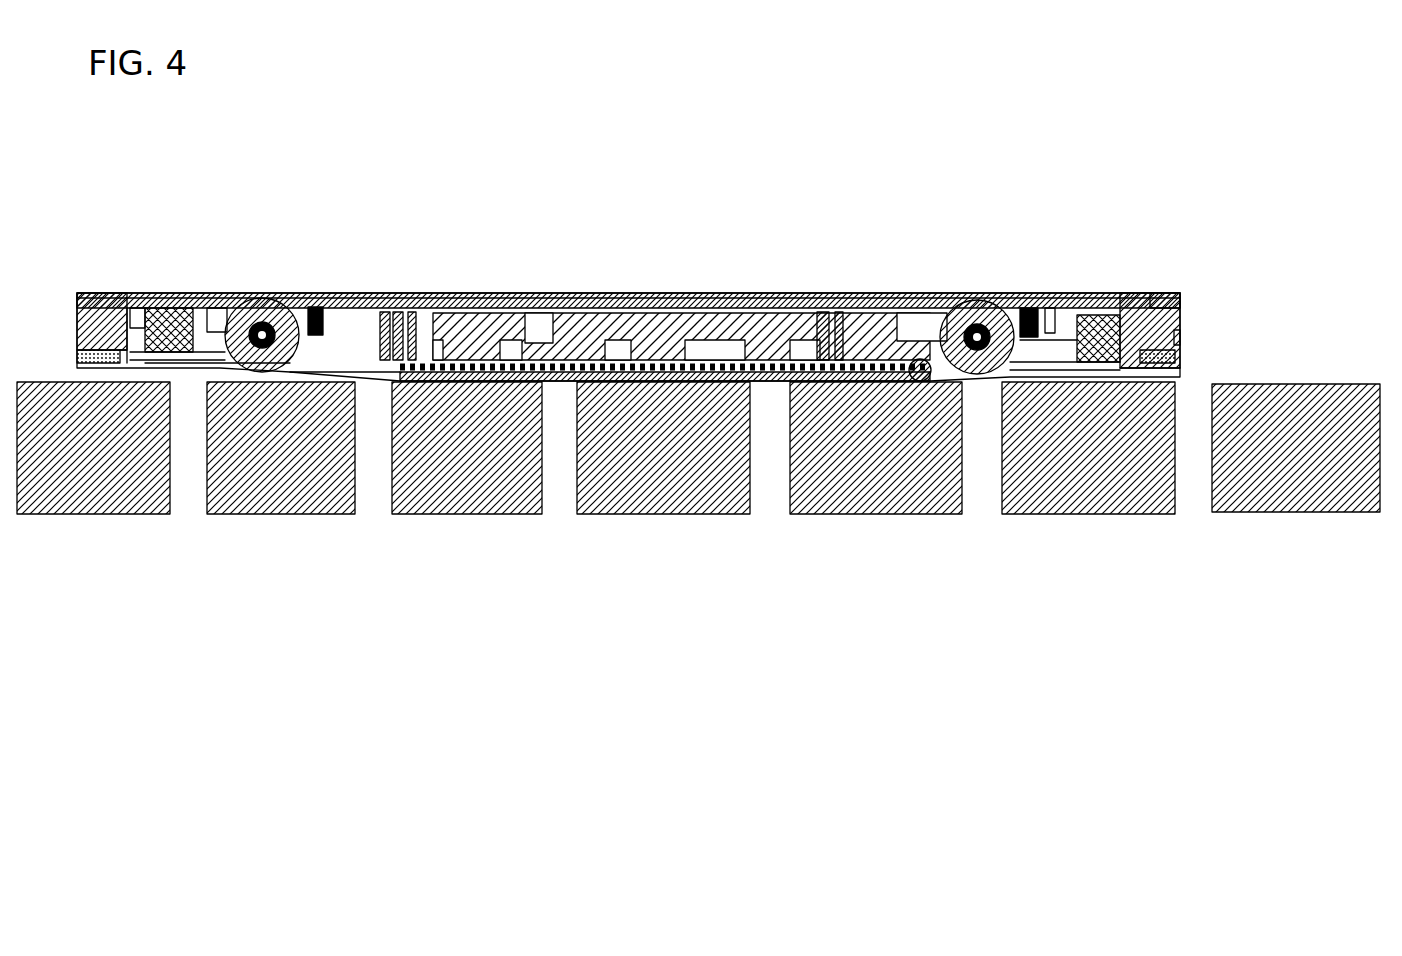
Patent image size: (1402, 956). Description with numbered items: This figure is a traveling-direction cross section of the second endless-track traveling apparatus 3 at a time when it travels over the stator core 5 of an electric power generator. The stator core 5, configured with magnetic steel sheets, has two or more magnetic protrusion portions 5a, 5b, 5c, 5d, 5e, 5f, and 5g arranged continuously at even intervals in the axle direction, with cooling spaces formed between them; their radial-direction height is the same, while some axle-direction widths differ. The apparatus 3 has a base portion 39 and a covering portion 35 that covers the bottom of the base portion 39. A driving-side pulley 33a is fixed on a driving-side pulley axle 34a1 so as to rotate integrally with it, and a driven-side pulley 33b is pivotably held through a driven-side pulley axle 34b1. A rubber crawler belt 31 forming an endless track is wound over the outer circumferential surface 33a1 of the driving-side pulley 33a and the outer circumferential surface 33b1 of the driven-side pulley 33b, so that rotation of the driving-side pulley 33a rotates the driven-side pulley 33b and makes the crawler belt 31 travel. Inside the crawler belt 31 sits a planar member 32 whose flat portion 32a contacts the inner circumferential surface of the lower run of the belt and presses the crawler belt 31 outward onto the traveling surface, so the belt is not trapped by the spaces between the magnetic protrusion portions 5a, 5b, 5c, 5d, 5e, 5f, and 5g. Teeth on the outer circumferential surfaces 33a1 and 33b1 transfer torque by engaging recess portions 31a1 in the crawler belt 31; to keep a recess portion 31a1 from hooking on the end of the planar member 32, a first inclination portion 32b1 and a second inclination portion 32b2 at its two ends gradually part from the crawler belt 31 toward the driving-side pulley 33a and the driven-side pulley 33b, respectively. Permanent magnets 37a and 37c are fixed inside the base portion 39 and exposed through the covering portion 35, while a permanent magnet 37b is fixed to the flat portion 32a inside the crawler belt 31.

The second endless-track traveling apparatus 3 is at (725, 218).
The stator core 5 is at (618, 507).
The magnetic protrusion portion 5a is at (93, 450).
The magnetic protrusion portion 5b is at (282, 450).
The magnetic protrusion portion 5c is at (480, 450).
The magnetic protrusion portion 5d is at (670, 445).
The magnetic protrusion portion 5e is at (882, 445).
The magnetic protrusion portion 5f is at (1080, 445).
The magnetic protrusion portion 5g is at (1272, 437).
The crawler belt 31 is at (363, 296).
The recess portion 31a1 is at (925, 372).
The planar member 32 is at (503, 295).
The flat portion 32a is at (560, 355).
The first inclination portion 32b1 is at (390, 350).
The second inclination portion 32b2 is at (877, 357).
The driving-side pulley 33a is at (250, 297).
The outer circumferential surface 33a1 is at (230, 297).
The driven-side pulley 33b is at (1000, 320).
The outer circumferential surface 33b1 is at (960, 320).
The driving-side pulley axle 34a1 is at (293, 297).
The driven-side pulley axle 34b1 is at (1008, 323).
The covering portion 35 is at (1178, 337).
The permanent magnet 37a is at (147, 297).
The permanent magnet 37b is at (725, 335).
The permanent magnet 37c is at (1128, 330).
The base portion 39 is at (1158, 297).